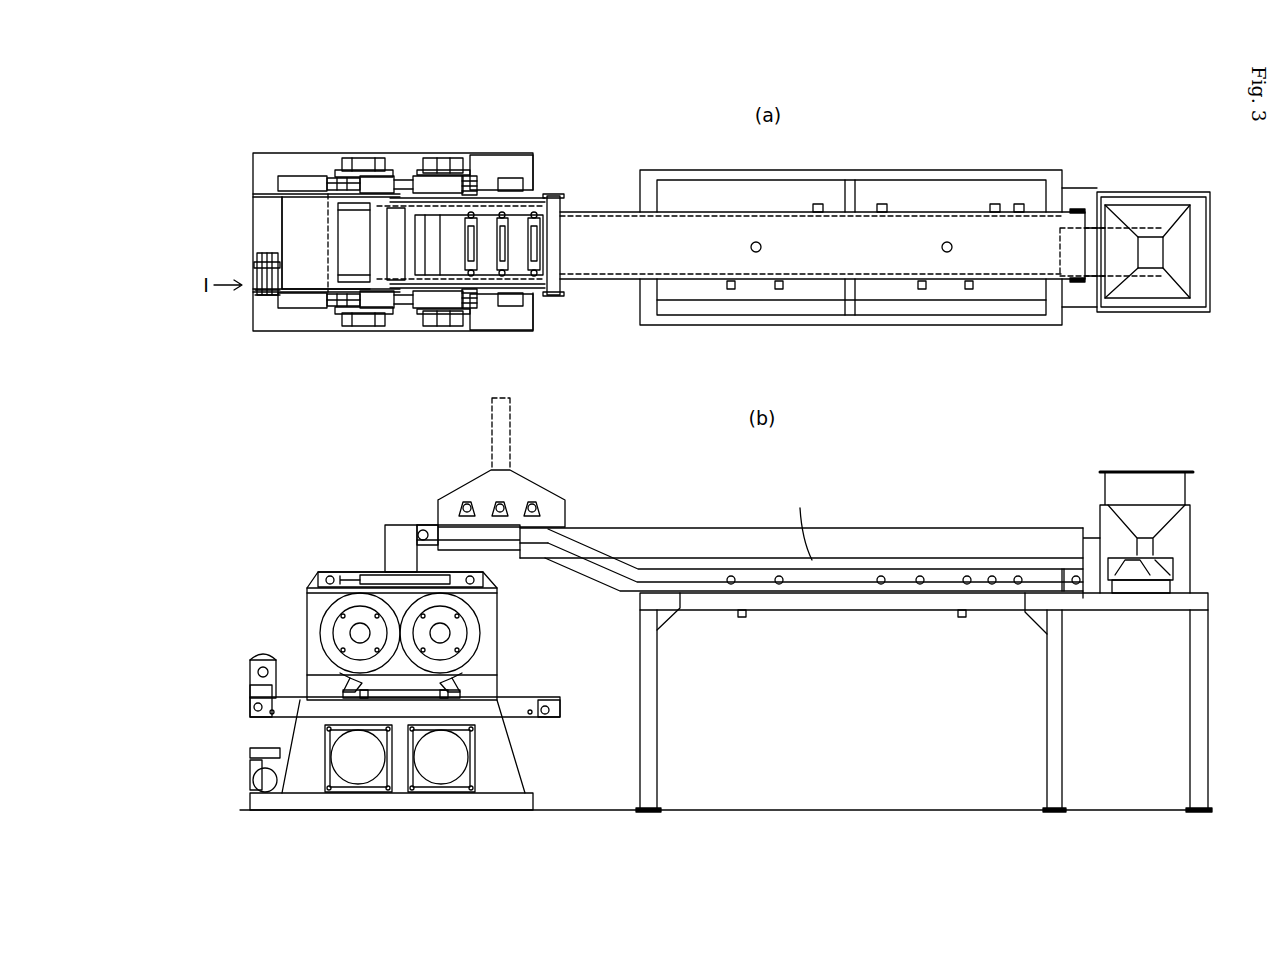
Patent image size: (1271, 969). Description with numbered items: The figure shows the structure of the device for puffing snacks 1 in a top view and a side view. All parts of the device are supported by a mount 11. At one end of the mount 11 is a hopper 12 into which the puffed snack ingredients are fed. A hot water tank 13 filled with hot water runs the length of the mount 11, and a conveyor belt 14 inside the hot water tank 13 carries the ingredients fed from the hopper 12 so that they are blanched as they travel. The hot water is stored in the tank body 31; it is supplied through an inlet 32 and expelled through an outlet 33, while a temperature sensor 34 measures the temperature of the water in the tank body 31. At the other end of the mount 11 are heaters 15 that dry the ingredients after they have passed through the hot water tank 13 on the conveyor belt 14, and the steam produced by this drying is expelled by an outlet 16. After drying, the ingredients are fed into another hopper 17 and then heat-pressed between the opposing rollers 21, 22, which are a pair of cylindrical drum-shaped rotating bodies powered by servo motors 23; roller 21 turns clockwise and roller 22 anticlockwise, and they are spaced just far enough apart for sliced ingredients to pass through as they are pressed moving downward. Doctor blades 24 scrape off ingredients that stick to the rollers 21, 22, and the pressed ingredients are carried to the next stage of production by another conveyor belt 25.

The device for puffing snacks 1 is at (280, 540).
The mount 11 is at (1021, 327).
The hopper 12 is at (1168, 195).
The hot water tank 13 is at (813, 290).
The conveyor belt 14 is at (595, 262).
The heaters 15 is at (536, 212).
The outlet 16 is at (466, 490).
The hopper 17 is at (392, 276).
The roller 21 is at (334, 308).
The roller 22 is at (461, 309).
The servo motors 23 is at (358, 773).
The doctor blades 24 is at (345, 684).
The conveyor belt 25 is at (298, 229).
The tank body 31 is at (900, 290).
The inlet 32 is at (818, 204).
The outlet 33 is at (742, 617).
The temperature sensor 34 is at (995, 204).